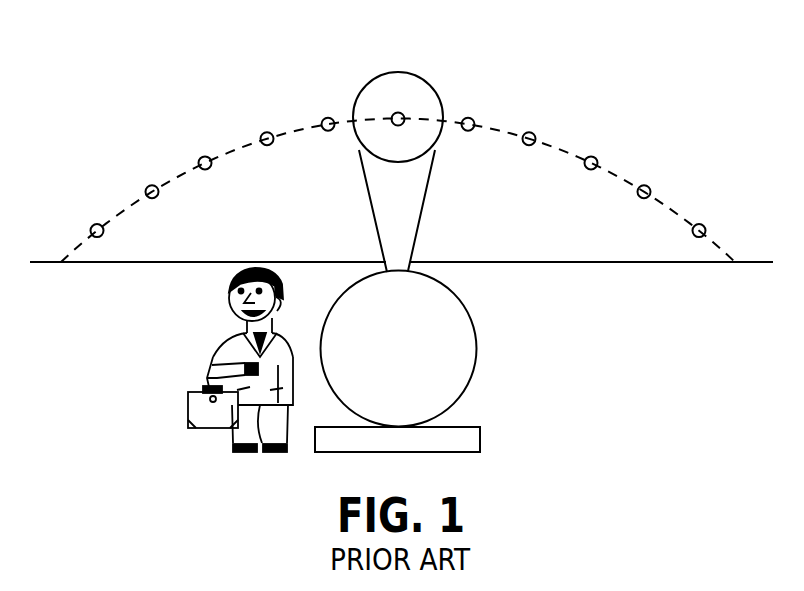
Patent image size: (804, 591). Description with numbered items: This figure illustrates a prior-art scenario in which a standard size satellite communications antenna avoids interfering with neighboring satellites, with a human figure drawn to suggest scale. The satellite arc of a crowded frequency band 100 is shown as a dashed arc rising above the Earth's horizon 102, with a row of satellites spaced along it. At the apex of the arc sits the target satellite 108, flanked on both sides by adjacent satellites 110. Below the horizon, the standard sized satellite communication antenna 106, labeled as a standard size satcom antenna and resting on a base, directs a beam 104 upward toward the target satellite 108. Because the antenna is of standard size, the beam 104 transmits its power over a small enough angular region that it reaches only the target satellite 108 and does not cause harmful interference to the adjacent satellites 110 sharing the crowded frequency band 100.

The crowded frequency band 100 is at (565, 150).
The Earth's horizon 102 is at (632, 263).
The beam 104 is at (417, 73).
The standard sized satellite communication antenna 106 is at (476, 339).
The target satellite 108 is at (392, 114).
The adjacent satellites 110 is at (326, 117).